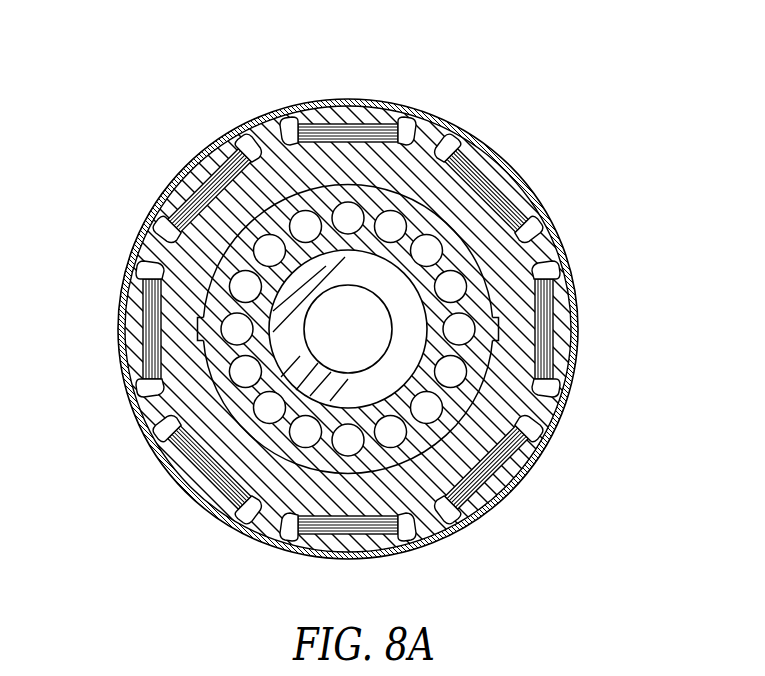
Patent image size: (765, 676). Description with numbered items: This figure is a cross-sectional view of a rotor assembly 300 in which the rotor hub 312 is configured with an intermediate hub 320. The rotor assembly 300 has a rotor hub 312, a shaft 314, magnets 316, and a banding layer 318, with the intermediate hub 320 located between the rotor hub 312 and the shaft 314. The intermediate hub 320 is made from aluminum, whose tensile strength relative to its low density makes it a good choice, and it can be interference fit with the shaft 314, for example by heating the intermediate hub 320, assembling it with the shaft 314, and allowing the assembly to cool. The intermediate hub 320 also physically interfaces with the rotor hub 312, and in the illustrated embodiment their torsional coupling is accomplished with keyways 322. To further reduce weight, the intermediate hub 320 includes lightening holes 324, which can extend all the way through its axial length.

The rotor assembly 300 is at (607, 82).
The rotor hub 312 is at (500, 267).
The shaft 314 is at (301, 366).
The magnets 316 is at (543, 322).
The banding layer 318 is at (560, 238).
The intermediate hub 320 is at (495, 497).
The keyways 322 is at (194, 329).
The lightening holes 324 is at (437, 230).